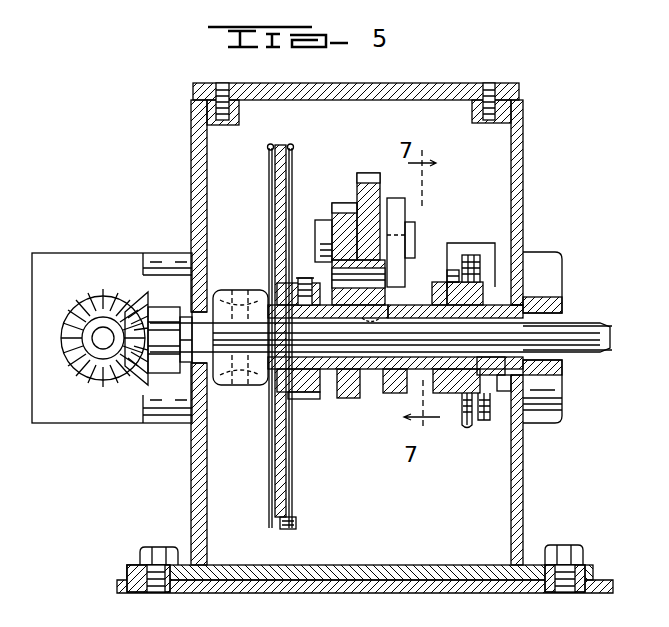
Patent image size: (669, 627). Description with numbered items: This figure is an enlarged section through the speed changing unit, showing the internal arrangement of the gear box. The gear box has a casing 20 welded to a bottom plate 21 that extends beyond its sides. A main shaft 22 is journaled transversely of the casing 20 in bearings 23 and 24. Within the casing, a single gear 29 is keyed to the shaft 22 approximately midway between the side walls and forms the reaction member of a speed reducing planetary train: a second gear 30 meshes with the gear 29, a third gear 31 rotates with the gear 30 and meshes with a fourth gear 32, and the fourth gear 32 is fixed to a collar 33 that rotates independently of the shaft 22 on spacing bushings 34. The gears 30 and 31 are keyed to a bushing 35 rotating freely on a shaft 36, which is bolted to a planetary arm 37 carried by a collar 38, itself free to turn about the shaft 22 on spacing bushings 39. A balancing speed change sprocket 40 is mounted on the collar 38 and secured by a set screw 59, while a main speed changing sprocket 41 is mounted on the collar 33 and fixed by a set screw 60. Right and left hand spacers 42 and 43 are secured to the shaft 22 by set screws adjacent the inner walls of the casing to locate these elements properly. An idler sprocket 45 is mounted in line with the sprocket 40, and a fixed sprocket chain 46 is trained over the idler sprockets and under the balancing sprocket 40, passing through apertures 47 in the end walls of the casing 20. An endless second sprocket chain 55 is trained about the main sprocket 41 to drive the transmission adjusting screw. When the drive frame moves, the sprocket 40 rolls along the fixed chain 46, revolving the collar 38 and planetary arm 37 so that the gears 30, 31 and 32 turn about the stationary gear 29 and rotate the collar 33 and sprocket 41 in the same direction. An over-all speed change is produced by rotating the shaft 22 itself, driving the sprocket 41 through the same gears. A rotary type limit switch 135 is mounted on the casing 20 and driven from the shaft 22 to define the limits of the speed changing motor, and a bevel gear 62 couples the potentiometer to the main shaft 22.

The casing 20 is at (522, 492).
The bottom plate 21 is at (404, 565).
The main shaft 22 is at (598, 338).
The bearing 23 is at (566, 318).
The bearing 24 is at (176, 377).
The single gear 29 is at (376, 380).
The second gear 30 is at (381, 196).
The third gear 31 is at (342, 208).
The fourth gear 32 is at (346, 400).
The collar 33 is at (333, 392).
The spacing bushings 34 is at (340, 325).
The bushing 35 is at (352, 232).
The shaft 36 is at (316, 235).
The planetary arm 37 is at (398, 215).
The collar 38 is at (424, 300).
The spacing bushings 39 is at (470, 318).
The balancing speed change sprocket 40 is at (447, 393).
The main speed changing sprocket 41 is at (290, 489).
The right hand spacer 42 is at (500, 390).
The left hand spacer 43 is at (243, 385).
The idler sprocket 45 is at (472, 258).
The sprocket chain 46 is at (492, 428).
The apertures 47 is at (497, 251).
The second sprocket chain 55 is at (296, 525).
The set screw 59 is at (405, 246).
The set screw 60 is at (308, 278).
The bevel gear 62 is at (140, 378).
The rotary type limit switch 135 is at (90, 412).